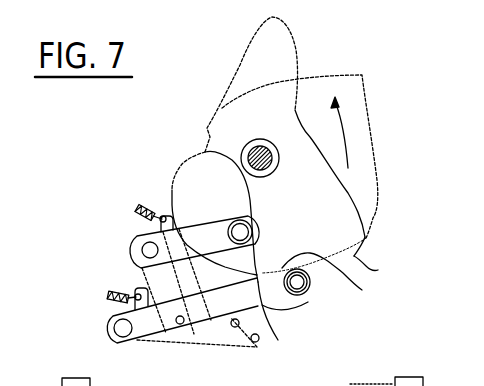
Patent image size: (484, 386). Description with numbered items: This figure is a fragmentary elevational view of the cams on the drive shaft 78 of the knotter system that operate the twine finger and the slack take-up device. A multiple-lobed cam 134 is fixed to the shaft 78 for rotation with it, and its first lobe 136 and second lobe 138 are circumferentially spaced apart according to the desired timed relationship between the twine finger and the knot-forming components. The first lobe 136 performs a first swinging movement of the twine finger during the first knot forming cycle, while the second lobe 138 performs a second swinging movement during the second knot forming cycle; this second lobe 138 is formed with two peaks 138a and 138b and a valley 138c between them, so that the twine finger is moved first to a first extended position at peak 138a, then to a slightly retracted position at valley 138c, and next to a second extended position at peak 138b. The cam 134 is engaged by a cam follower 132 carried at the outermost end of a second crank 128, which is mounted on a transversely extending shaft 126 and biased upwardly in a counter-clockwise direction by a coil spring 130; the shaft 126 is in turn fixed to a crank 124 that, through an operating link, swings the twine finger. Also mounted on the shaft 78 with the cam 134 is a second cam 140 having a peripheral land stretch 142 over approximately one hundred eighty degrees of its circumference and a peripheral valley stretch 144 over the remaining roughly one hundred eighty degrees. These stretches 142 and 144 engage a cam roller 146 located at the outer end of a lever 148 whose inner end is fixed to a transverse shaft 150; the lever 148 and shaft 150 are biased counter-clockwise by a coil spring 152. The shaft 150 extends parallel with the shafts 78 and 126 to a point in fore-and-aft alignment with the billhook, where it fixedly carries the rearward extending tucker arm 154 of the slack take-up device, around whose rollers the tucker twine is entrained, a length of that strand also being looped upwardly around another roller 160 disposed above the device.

The shaft 78 is at (258, 146).
The crank 124 is at (140, 267).
The transversely extending shaft 126 is at (137, 243).
The second crank 128 is at (187, 252).
The coil spring 130 is at (148, 206).
The cam follower 132 is at (229, 226).
The multiple-lobed cam 134 is at (204, 126).
The first lobe 136 is at (250, 46).
The second lobe 138 is at (367, 241).
The peak 138a is at (284, 320).
The peak 138b is at (382, 268).
The valley 138c is at (338, 277).
The second cam 140 is at (385, 122).
The peripheral land stretch 142 is at (416, 166).
The peripheral valley stretch 144 is at (333, 75).
The cam roller 146 is at (310, 298).
The lever 148 is at (270, 312).
The transverse shaft 150 is at (110, 325).
The coil spring 152 is at (107, 297).
The tucker arm 154 is at (192, 348).
The roller 160 is at (220, 380).